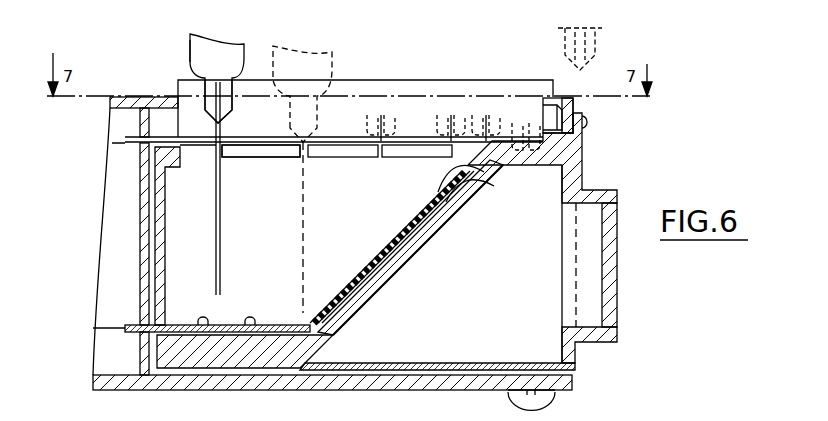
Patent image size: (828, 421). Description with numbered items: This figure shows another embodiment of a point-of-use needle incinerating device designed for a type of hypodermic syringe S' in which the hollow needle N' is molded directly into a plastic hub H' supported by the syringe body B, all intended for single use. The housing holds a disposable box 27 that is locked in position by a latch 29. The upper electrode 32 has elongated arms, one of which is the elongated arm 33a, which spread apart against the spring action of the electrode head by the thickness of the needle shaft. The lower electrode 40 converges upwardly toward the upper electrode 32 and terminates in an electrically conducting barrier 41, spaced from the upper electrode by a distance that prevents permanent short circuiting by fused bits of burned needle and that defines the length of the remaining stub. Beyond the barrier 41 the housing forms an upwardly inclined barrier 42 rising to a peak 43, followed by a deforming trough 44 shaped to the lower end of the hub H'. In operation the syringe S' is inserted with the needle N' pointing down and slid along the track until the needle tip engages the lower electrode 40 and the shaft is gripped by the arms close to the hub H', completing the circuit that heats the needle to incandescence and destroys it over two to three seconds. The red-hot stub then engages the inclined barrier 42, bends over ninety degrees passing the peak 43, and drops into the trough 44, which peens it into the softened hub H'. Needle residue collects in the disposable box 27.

The disposable box 27 is at (577, 357).
The latch 29 is at (587, 128).
The upper electrode 32 is at (247, 155).
The elongated arm 33a is at (277, 150).
The lower electrode 40 is at (351, 280).
The barrier 41 is at (440, 200).
The inclined barrier 42 is at (470, 170).
The peak 43 is at (505, 135).
The deforming trough 44 is at (505, 133).
The syringe body B is at (225, 78).
The hypodermic syringe S' is at (171, 61).
The hub H' is at (235, 102).
The hollow needle N' is at (234, 188).